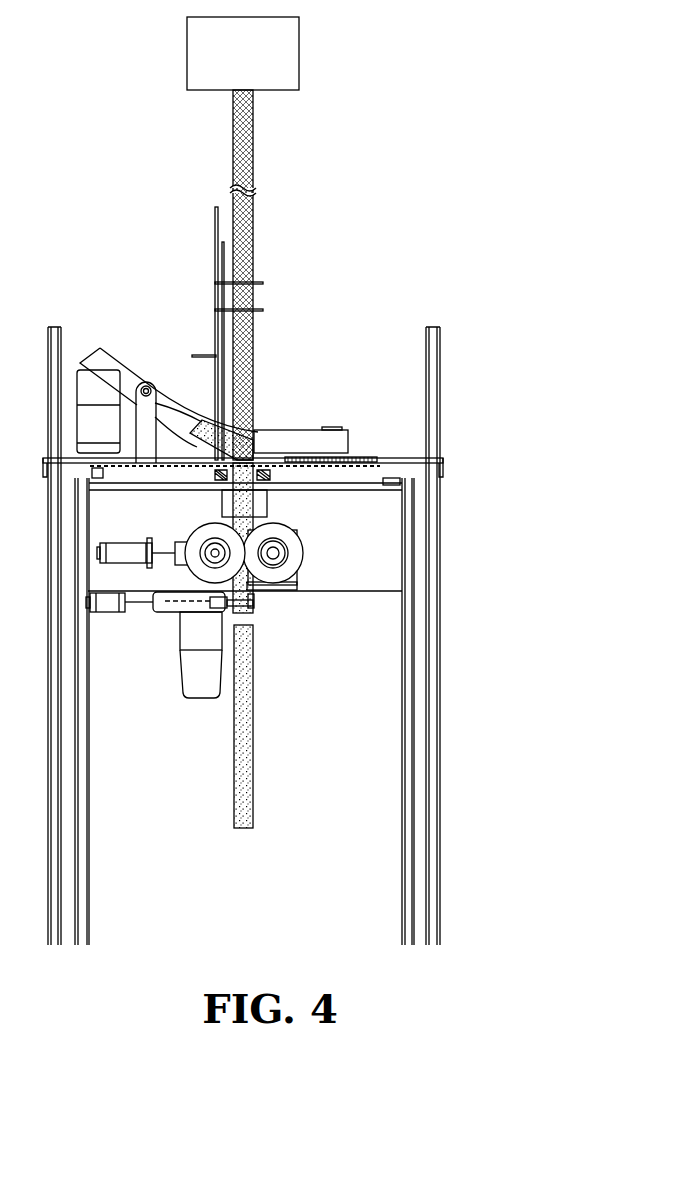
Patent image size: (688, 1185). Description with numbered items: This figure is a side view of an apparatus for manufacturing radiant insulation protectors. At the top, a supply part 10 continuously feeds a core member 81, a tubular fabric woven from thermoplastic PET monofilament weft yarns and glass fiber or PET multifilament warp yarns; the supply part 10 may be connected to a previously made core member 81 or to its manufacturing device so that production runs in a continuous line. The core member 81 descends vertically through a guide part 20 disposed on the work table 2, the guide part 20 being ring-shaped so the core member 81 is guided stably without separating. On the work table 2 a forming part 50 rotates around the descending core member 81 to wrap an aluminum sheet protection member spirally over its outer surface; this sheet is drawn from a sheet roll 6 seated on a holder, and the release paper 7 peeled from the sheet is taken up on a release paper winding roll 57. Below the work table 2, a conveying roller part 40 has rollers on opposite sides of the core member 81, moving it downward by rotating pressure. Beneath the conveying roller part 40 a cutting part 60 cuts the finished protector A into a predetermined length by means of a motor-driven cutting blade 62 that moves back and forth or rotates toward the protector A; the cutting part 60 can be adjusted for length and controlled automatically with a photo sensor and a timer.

The work table 2 is at (397, 458).
The supply part 10 is at (243, 53).
The core member 81 is at (245, 207).
The guide part 20 is at (262, 283).
The forming part 50 is at (82, 338).
The sheet roll 6 is at (122, 372).
The release paper 7 is at (280, 437).
The release paper winding roll 57 is at (338, 427).
The conveying roller part 40 is at (293, 552).
The cutting blade 62 is at (253, 602).
The cutting part 60 is at (158, 636).
The protector A is at (243, 776).